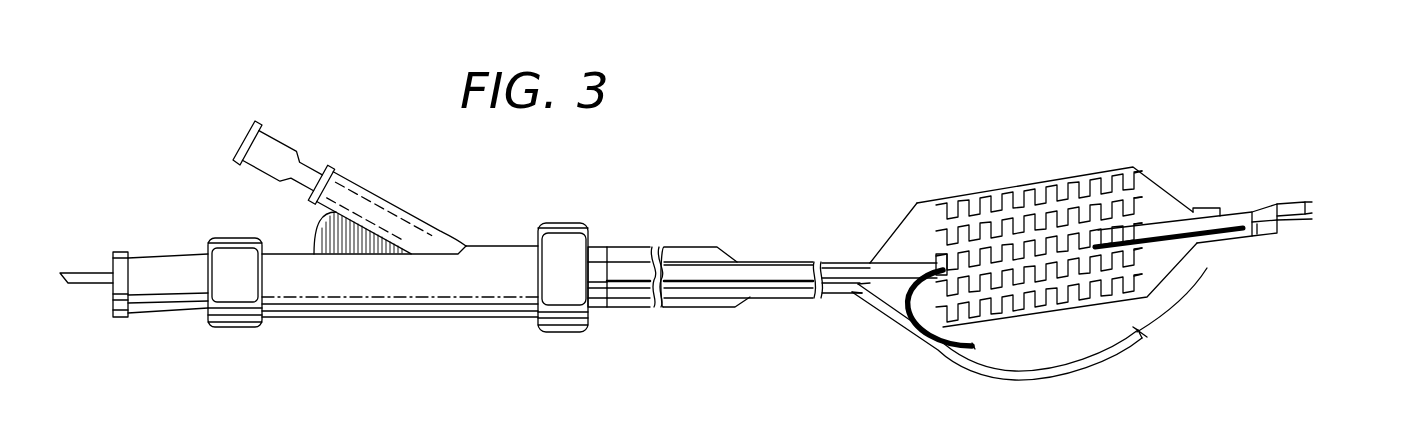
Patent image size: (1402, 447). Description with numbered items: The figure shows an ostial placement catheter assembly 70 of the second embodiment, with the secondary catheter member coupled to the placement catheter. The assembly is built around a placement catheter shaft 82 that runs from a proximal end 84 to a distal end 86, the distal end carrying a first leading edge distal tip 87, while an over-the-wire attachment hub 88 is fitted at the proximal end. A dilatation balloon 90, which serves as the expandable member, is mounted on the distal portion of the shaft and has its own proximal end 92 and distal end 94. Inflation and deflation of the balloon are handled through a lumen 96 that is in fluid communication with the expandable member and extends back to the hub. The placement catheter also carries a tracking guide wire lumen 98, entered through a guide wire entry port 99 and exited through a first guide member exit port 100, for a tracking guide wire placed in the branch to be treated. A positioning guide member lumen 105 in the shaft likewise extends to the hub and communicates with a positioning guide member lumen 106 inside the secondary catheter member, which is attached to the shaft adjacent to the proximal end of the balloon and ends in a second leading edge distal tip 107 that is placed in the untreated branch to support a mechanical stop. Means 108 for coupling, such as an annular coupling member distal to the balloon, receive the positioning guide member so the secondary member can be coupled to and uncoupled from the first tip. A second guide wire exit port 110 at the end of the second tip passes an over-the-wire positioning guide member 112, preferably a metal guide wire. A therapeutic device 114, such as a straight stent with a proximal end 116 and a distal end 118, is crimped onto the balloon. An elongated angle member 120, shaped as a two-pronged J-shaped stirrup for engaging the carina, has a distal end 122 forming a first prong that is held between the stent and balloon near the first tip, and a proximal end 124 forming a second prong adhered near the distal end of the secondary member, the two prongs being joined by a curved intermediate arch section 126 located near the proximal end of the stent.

The ostial placement catheter assembly 70 is at (717, 224).
The placement catheter shaft 82 is at (668, 308).
The proximal end 84 is at (423, 318).
The distal end 86 is at (1240, 210).
The first leading edge distal tip 87 is at (1290, 205).
The over-the-wire attachment hub 88 is at (235, 329).
The dilatation balloon 90 is at (905, 240).
The proximal end 92 is at (867, 262).
The distal end 94 is at (1193, 209).
The lumen 96 is at (638, 270).
The tracking guide wire lumen 98 is at (800, 273).
The guide wire entry port 99 is at (723, 247).
The first guide member exit port 100 is at (1307, 208).
The positioning guide member lumen 105 is at (770, 298).
The positioning guide member lumen 106 is at (1040, 378).
The second leading edge distal tip 107 is at (1133, 347).
The means for coupling 108 is at (1270, 234).
The second guide wire exit port 110 is at (1147, 333).
The over-the-wire positioning guide member 112 is at (1312, 220).
The therapeutic device 114 is at (1020, 188).
The proximal end 116 is at (942, 200).
The distal end 118 is at (1112, 175).
The elongated angle member 120 is at (973, 342).
The distal end 122 is at (1227, 233).
The proximal end 124 is at (932, 347).
The curved intermediate arch section 126 is at (866, 305).